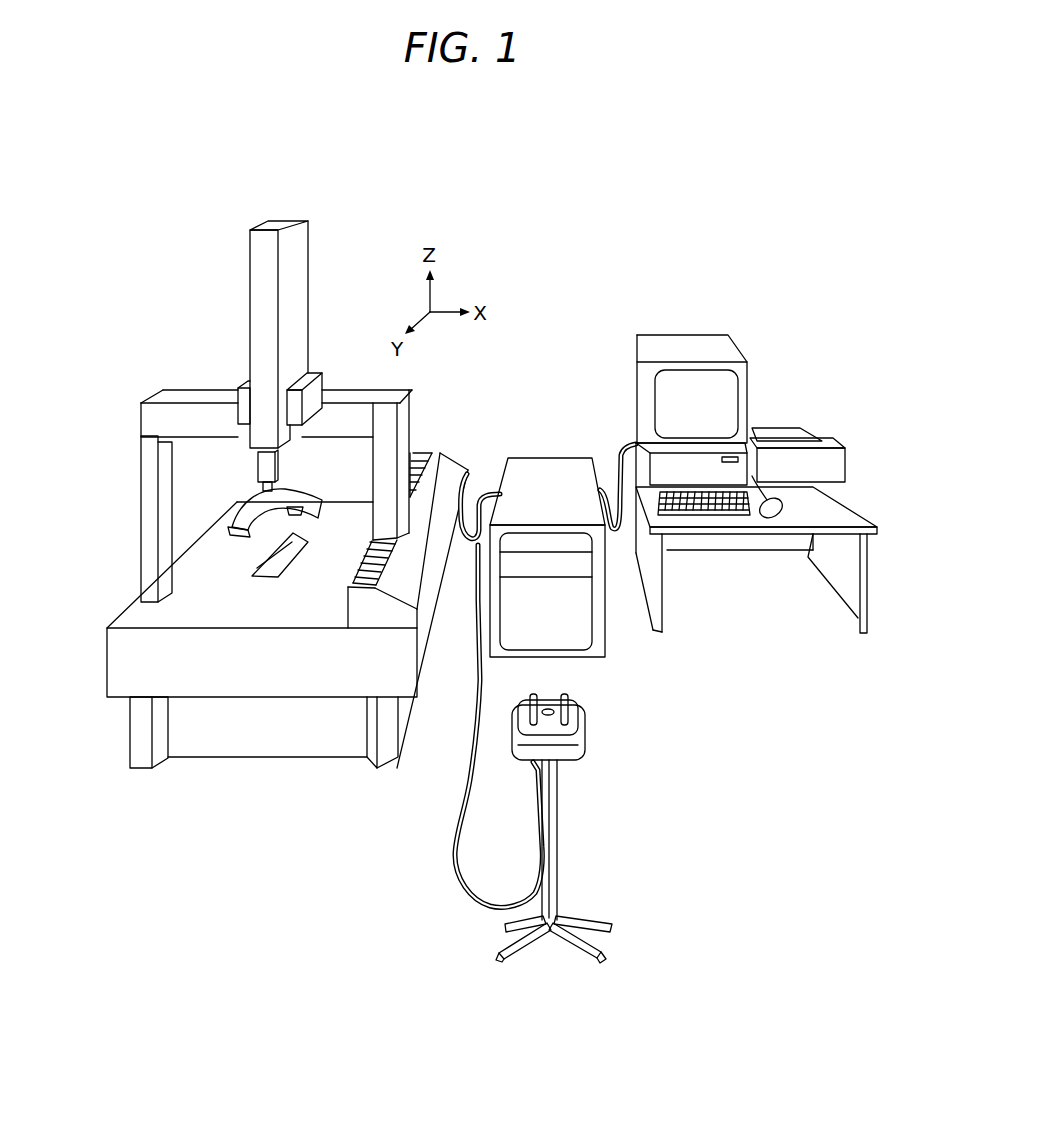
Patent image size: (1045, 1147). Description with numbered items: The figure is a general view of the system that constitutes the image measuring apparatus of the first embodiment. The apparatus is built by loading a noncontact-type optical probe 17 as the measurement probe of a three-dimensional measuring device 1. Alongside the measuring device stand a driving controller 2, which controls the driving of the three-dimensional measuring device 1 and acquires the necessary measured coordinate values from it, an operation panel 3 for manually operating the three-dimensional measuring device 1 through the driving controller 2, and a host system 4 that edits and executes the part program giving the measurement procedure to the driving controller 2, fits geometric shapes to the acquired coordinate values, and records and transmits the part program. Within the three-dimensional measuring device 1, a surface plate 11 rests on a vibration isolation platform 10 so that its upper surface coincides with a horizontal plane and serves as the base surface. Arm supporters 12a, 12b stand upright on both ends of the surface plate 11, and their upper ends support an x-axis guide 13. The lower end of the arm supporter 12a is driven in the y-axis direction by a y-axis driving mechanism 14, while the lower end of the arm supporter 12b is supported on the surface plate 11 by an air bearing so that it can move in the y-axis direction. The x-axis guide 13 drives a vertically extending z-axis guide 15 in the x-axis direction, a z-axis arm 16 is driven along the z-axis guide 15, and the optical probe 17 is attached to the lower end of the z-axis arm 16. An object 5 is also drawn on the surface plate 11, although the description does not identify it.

The three-dimensional measuring device 1 is at (338, 257).
The driving controller 2 is at (548, 462).
The operation panel 3 is at (614, 738).
The host system 4 is at (776, 356).
The reference block 5 is at (290, 561).
The vibration isolation platform 10 is at (135, 739).
The surface plate 11 is at (118, 661).
The arm supporter 12a is at (408, 423).
The arm supporter 12b is at (143, 515).
The x-axis guide 13 is at (194, 392).
The y-axis driving mechanism 14 is at (445, 466).
The z-axis guide 15 is at (262, 296).
The z-axis arm 16 is at (280, 456).
The optical probe 17 is at (233, 503).